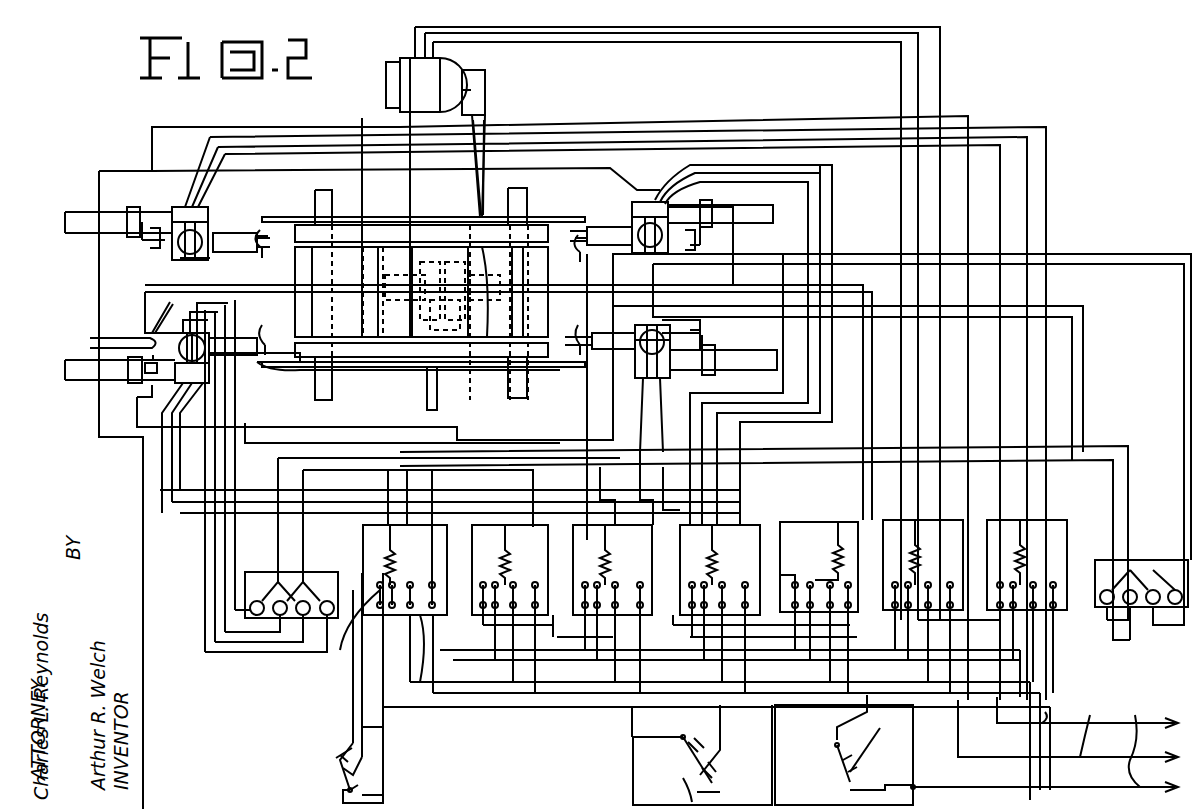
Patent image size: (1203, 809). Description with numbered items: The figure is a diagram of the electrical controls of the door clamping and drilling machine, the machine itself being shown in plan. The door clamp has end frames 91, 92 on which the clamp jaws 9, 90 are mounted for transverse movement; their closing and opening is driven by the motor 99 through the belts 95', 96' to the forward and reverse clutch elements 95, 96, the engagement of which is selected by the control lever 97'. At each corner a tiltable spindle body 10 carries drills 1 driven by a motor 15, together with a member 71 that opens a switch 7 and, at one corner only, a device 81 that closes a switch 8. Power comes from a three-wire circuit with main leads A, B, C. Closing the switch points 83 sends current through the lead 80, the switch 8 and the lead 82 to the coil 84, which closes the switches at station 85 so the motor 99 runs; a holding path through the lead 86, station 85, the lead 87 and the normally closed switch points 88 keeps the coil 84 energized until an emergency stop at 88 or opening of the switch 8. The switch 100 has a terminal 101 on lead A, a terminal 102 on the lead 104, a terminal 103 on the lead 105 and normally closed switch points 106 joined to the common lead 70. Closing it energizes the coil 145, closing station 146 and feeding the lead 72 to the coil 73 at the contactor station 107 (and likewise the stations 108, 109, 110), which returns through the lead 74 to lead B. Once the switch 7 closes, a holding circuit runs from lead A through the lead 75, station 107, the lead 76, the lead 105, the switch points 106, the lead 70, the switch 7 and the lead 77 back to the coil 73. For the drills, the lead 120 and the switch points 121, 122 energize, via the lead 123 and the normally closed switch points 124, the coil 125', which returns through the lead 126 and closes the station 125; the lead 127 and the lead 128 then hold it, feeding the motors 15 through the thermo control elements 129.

The drill 1 is at (428, 294).
The switch 7 is at (135, 243).
The switch 8 is at (148, 324).
The clamp jaw 9 is at (65, 375).
The spindle body 10 is at (598, 336).
The motor 15 is at (208, 212).
The common lead 70 is at (143, 468).
The member 71 is at (155, 262).
The lead 72 is at (792, 645).
The coil 73 is at (728, 500).
The lead 74 is at (738, 530).
The lead 75 is at (640, 705).
The lead 76 is at (660, 672).
The lead 77 is at (720, 394).
The lead 80 is at (858, 386).
The device 81 is at (177, 314).
The lead 82 is at (875, 420).
The switch points 83 is at (835, 772).
The coil 84 is at (897, 528).
The station 85 is at (932, 595).
The lead 86 is at (895, 640).
The lead 87 is at (870, 735).
The switch points 88 is at (835, 745).
The clamp jaw 90 is at (65, 225).
The end frame 91 is at (520, 392).
The end frame 92 is at (332, 388).
The forward clutch element 95 is at (385, 308).
The belt 95' is at (389, 170).
The reverse clutch element 96 is at (486, 319).
The belt 96' is at (457, 167).
The control lever 97' is at (439, 317).
The motor 99 is at (405, 65).
The switch 100 is at (702, 755).
The terminal 101 is at (683, 800).
The terminal 102 is at (730, 785).
The terminal 103 is at (716, 770).
The lead 104 is at (772, 722).
The lead 105 is at (720, 730).
The switch points 106 is at (685, 735).
The contactor station 107 is at (708, 597).
The contactor station 108 is at (606, 597).
The contactor station 109 is at (507, 599).
The contactor station 110 is at (1022, 595).
The lead 120 is at (385, 758).
The switch point 121 is at (340, 785).
The switch point 122 is at (385, 783).
The lead 123 is at (353, 705).
The switch points 124 is at (336, 755).
The station 125 is at (336, 637).
The coil 125' is at (384, 542).
The lead 126 is at (410, 650).
The lead 127 is at (392, 682).
The lead 128 is at (385, 735).
The thermo control elements 129 is at (262, 640).
The coil 145 is at (805, 530).
The station 146 is at (780, 575).
The main lead A is at (1046, 744).
The main lead B is at (1068, 729).
The main lead C is at (1087, 712).